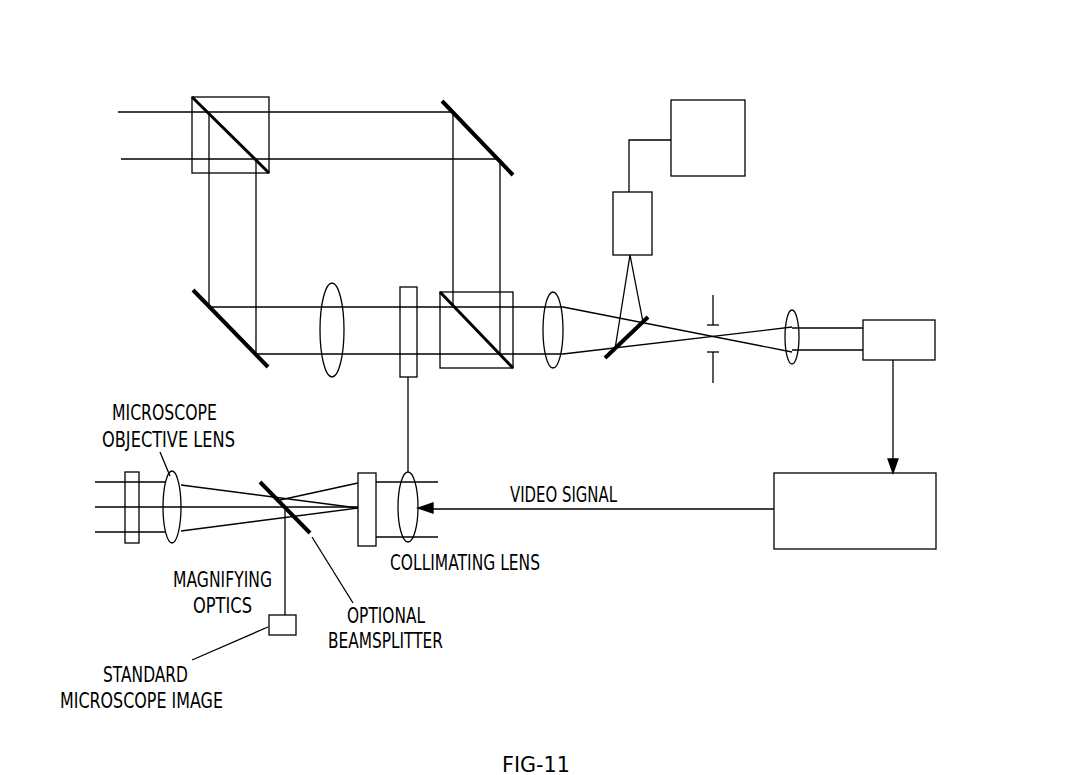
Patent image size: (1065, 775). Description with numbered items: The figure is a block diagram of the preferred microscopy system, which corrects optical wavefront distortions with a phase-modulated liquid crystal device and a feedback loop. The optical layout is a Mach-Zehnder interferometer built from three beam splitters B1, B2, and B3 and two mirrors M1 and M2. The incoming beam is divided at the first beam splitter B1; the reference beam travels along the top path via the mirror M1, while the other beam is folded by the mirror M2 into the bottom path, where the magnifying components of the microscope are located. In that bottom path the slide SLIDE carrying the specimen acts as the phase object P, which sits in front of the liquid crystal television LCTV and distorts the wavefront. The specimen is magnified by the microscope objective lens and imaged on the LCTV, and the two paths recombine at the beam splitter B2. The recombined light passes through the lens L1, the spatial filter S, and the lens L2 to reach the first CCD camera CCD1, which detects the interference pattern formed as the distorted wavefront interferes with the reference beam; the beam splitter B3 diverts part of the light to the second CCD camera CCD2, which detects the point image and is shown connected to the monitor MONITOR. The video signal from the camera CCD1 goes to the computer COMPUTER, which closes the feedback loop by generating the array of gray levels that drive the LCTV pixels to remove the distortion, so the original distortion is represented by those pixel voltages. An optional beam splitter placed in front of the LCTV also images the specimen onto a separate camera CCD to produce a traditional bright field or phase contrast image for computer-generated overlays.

The beam splitter B1 is at (230, 120).
The mirror M1 is at (477, 138).
The mirror M2 is at (230, 328).
The phase object P is at (332, 345).
The liquid crystal television LCTV is at (386, 402).
The beam splitter B2 is at (476, 349).
The lens L1 is at (553, 349).
The beam splitter B3 is at (626, 318).
The spatial filter S is at (713, 353).
The lens L2 is at (792, 352).
The CCD camera CCD1 is at (899, 319).
The CCD camera CCD2 is at (657, 223).
The monitor MONITOR is at (727, 146).
The computer COMPUTER is at (855, 454).
The slide SLIDE is at (129, 522).
The CCD camera CCD is at (281, 588).